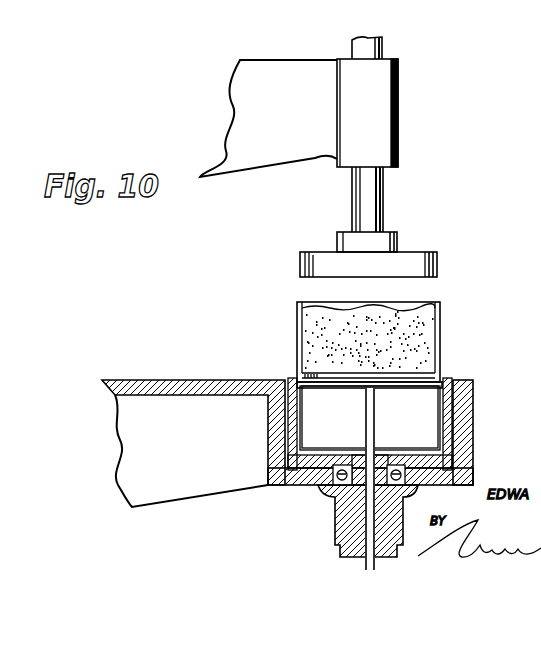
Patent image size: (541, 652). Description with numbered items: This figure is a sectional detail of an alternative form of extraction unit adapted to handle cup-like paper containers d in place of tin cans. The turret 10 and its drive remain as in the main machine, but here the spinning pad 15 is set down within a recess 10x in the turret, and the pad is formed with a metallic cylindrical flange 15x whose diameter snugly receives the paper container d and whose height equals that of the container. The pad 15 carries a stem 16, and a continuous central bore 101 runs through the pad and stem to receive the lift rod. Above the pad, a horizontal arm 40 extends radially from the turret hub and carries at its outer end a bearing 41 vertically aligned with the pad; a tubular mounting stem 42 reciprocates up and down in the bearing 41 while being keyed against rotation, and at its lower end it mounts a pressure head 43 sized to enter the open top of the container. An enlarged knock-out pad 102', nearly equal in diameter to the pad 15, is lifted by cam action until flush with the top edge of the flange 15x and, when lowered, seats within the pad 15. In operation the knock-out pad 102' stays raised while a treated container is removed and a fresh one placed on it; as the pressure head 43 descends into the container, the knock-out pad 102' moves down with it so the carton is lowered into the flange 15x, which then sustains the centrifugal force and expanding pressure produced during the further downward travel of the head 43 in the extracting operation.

The turret 10 is at (170, 392).
The recesses in the turret 10x is at (293, 486).
The pad 15 is at (268, 460).
The metallic cylindrical flange 15x is at (288, 428).
The stem 16 is at (335, 524).
The central bore 101 is at (358, 558).
The knock-out pad 102' is at (410, 345).
The cup-like paper container d is at (440, 312).
The horizontal arm 40 is at (263, 150).
The bearing 41 is at (378, 127).
The tubular mounting stem 42 is at (383, 193).
The pressure head 43 is at (413, 258).